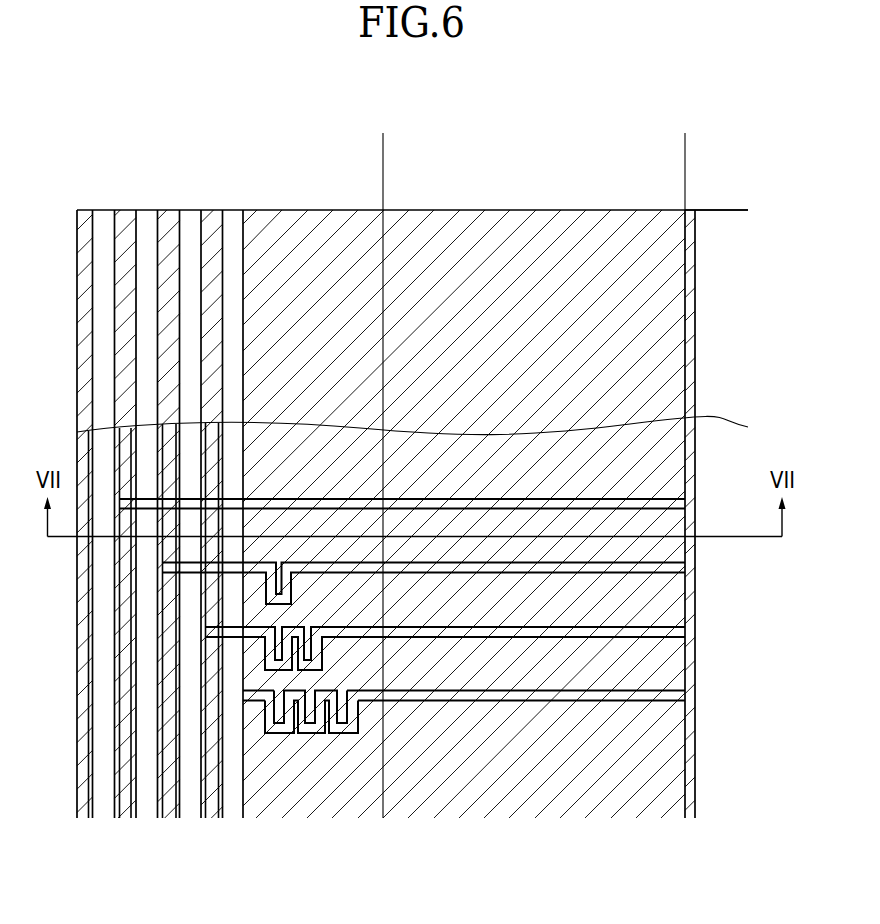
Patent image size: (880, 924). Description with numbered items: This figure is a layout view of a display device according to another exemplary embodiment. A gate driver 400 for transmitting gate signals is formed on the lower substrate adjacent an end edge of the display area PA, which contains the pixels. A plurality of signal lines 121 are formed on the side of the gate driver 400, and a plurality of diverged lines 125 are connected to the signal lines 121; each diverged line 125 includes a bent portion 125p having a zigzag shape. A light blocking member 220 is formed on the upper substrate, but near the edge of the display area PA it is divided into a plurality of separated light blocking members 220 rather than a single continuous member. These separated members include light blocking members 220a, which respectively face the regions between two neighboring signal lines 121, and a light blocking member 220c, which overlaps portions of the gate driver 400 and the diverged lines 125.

The light blocking member 220 is at (303, 121).
The light blocking members 220a is at (211, 240).
The light blocking member 220c is at (300, 240).
The signal lines 121 is at (87, 626).
The diverged lines 125 is at (148, 499).
The bent portion 125p is at (308, 752).
The gate driver 400 is at (748, 155).
The display area PA is at (716, 170).